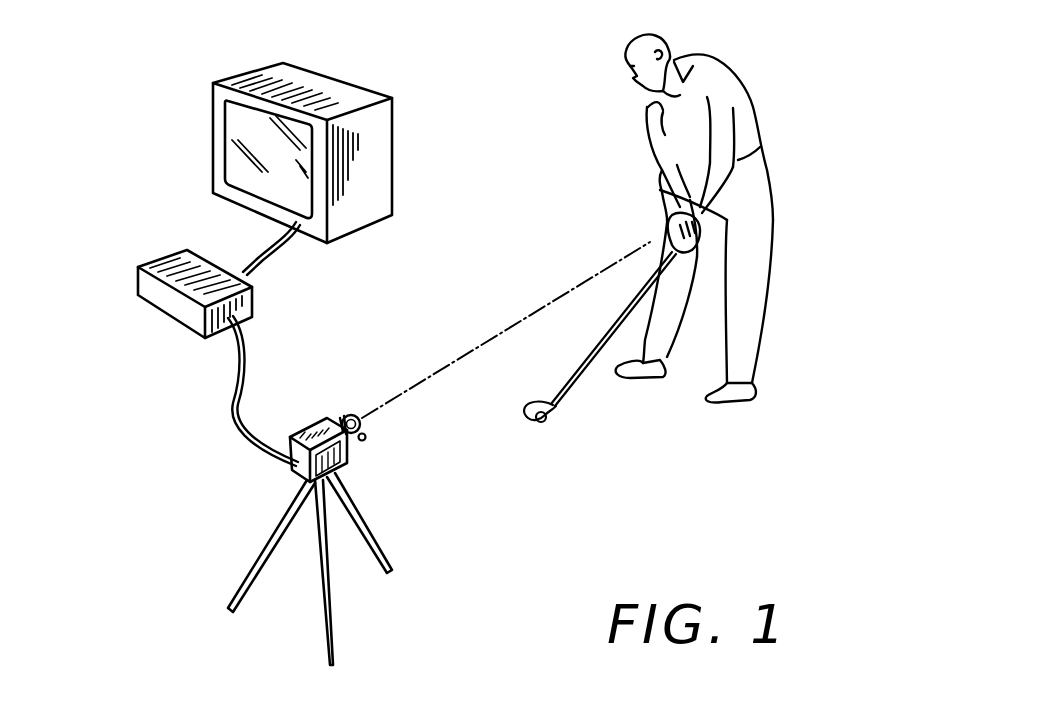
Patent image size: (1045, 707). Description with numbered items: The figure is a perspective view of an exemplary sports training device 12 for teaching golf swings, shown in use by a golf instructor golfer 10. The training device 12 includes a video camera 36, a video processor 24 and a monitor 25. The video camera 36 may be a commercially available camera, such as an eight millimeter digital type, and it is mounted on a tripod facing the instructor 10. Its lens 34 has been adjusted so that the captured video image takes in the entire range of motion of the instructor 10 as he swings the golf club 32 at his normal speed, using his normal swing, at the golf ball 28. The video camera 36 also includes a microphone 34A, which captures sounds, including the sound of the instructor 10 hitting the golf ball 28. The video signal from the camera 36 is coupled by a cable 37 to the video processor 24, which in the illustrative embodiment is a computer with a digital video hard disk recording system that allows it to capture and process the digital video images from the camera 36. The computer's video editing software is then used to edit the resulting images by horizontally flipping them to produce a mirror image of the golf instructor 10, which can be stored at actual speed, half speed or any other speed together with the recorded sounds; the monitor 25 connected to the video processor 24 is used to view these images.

The golf instructor golfer 10 is at (758, 106).
The training device 12 is at (517, 493).
The video processor 24 is at (158, 308).
The monitor 25 is at (393, 122).
The golf ball 28 is at (548, 423).
The golf club 32 is at (597, 345).
The lens 34 is at (367, 430).
The microphone 34A is at (364, 441).
The video camera 36 is at (317, 417).
The cable 37 is at (230, 417).